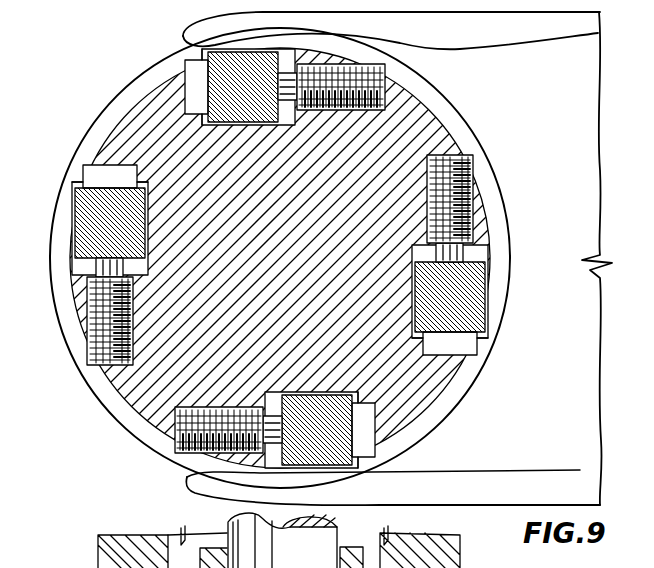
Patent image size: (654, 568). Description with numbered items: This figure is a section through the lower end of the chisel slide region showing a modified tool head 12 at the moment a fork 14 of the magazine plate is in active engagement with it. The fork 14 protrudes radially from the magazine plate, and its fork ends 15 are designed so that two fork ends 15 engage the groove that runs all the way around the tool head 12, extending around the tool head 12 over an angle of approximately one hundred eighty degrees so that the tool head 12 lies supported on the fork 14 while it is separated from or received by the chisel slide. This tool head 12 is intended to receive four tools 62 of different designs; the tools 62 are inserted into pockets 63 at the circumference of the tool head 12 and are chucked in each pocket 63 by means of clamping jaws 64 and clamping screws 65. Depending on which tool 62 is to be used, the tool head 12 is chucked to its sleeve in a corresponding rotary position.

The tool head 12 is at (126, 394).
The fork 14 is at (580, 125).
The fork ends 15 is at (590, 34).
The tools 62 is at (222, 100).
The pockets 63 is at (232, 108).
The clamping jaws 64 is at (197, 66).
The clamping screws 65 is at (392, 80).